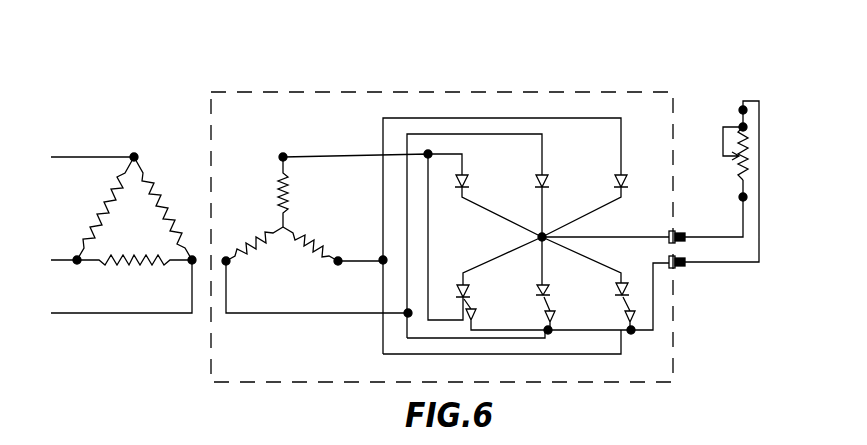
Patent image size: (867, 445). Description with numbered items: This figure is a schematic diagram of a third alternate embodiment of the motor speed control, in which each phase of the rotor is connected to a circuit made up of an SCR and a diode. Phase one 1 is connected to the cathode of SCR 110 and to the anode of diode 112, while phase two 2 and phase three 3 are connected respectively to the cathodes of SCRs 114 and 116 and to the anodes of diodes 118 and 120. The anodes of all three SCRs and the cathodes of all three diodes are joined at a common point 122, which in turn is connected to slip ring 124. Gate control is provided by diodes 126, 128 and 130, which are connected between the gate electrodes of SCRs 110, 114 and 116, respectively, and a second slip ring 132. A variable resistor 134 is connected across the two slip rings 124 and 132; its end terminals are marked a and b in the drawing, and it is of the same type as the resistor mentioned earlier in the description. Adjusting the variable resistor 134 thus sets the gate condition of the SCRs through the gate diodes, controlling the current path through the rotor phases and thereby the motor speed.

The phase one 1 is at (288, 190).
The phase two 2 is at (314, 246).
The phase three 3 is at (249, 246).
The SCR 110 is at (461, 283).
The diode 112 is at (466, 178).
The SCR 114 is at (552, 276).
The SCR 116 is at (616, 263).
The diode 118 is at (547, 180).
The diode 120 is at (625, 180).
The common point 122 is at (540, 230).
The slip ring 124 is at (682, 232).
The diode 126 is at (476, 313).
The diode 128 is at (554, 316).
The diode 130 is at (633, 335).
The slip ring 132 is at (683, 267).
The variable resistor 134 is at (738, 170).
The terminal a is at (736, 110).
The terminal b is at (736, 197).